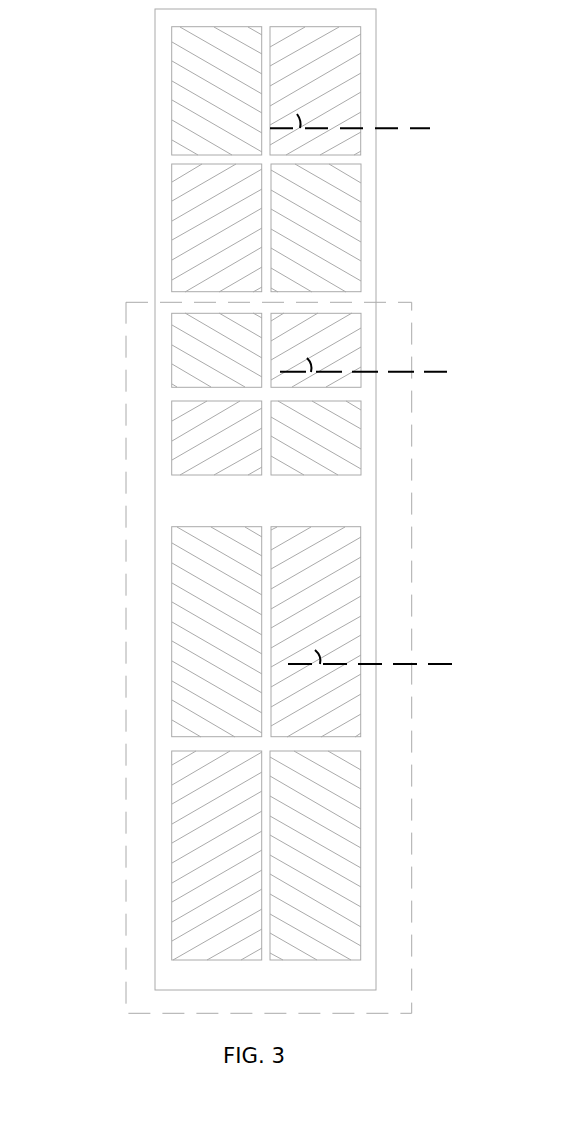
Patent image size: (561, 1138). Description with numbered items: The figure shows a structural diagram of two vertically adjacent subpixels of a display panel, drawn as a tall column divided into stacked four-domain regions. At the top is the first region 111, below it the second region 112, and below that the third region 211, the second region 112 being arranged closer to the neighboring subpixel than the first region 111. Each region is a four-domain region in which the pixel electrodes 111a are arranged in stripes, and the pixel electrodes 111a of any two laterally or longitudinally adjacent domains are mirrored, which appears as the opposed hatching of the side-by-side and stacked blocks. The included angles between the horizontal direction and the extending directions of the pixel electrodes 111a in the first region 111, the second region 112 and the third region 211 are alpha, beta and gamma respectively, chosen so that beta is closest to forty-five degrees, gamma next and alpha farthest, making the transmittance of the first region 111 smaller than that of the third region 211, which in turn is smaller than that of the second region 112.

The first region 111 is at (110, 37).
The pixel electrode 111a is at (345, 65).
The second region 112 is at (109, 325).
The third region 211 is at (109, 528).